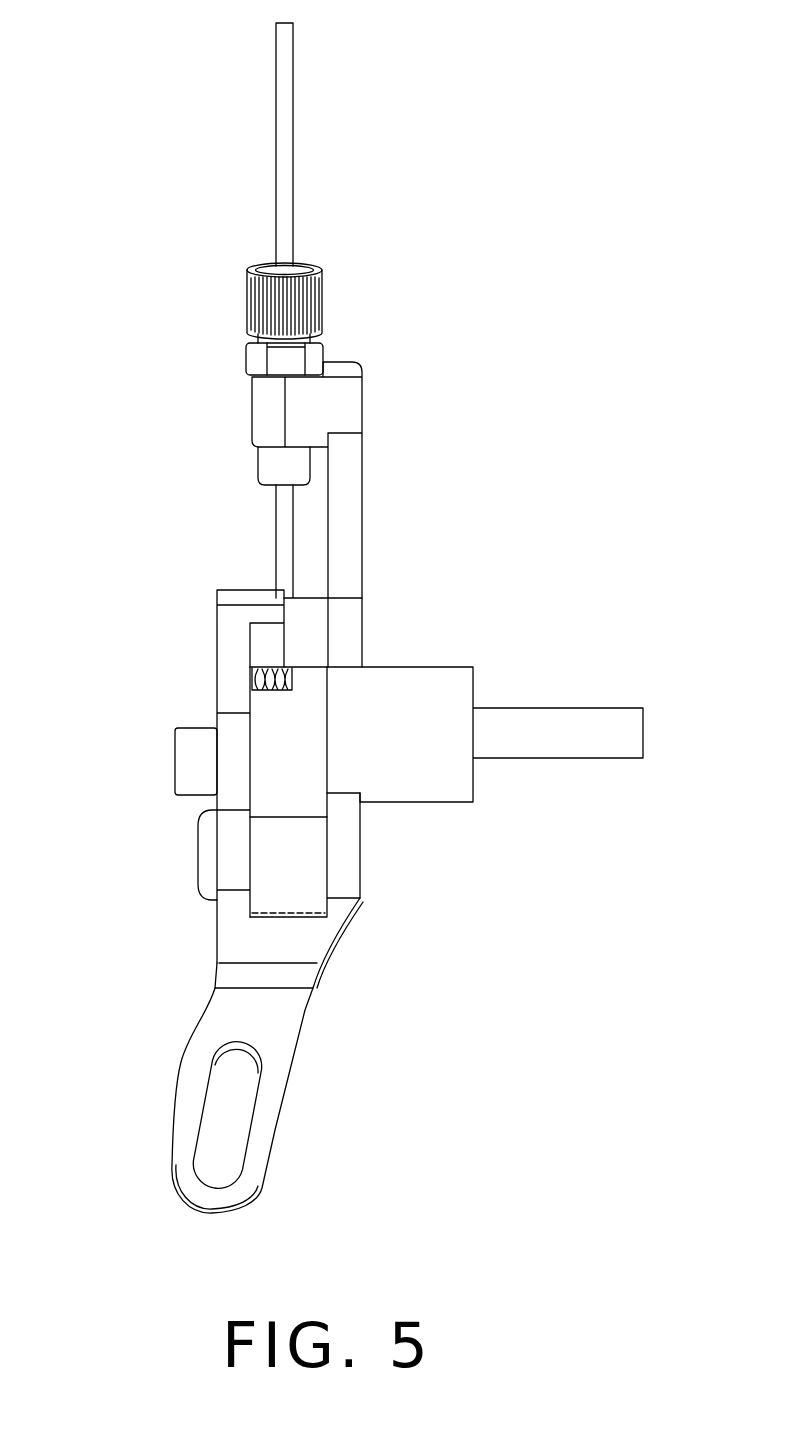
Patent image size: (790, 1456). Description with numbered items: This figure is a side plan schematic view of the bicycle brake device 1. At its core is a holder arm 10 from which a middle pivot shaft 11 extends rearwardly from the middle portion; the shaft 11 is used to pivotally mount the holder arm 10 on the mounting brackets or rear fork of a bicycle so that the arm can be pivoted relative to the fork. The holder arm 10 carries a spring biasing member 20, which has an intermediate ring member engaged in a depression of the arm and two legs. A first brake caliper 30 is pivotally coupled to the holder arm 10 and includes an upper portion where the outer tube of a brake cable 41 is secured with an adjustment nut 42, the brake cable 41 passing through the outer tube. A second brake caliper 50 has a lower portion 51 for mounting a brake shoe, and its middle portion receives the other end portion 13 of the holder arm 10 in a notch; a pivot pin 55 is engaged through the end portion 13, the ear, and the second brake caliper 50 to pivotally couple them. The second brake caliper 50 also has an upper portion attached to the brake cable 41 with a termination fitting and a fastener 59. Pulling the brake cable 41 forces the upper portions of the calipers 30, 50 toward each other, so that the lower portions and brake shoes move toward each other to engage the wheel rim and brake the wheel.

The bicycle brake device 1 is at (580, 196).
The holder arm 10 is at (277, 770).
The middle pivot shaft 11 is at (442, 680).
The end portion 13 is at (303, 874).
The spring biasing member 20 is at (257, 683).
The first brake caliper 30 is at (353, 480).
The brake cable 41 is at (281, 127).
The adjustment nut 42 is at (322, 282).
The second brake caliper 50 is at (227, 625).
The lower portion 51 is at (185, 1148).
The pivot pin 55 is at (208, 868).
The fastener 59 is at (185, 752).